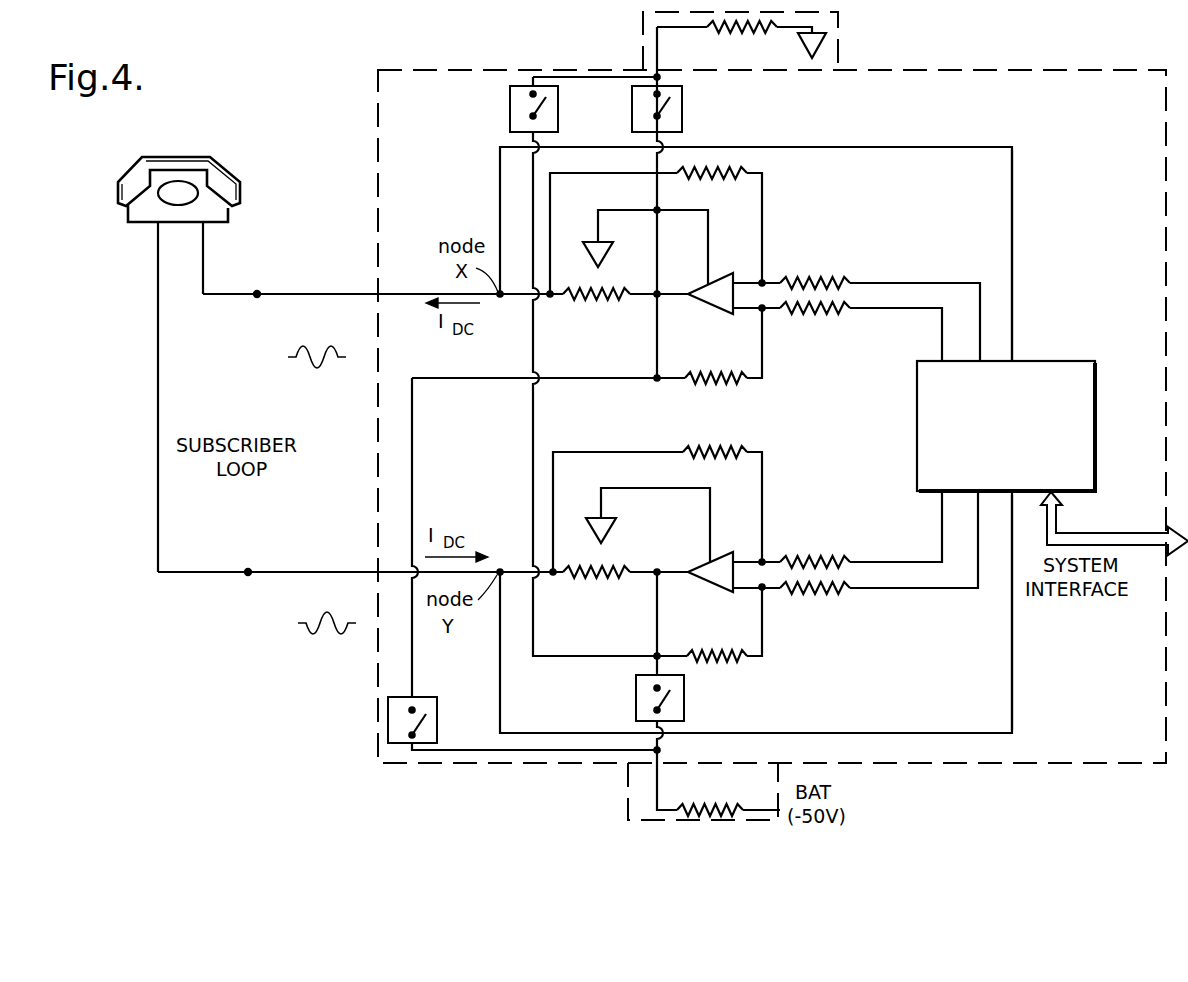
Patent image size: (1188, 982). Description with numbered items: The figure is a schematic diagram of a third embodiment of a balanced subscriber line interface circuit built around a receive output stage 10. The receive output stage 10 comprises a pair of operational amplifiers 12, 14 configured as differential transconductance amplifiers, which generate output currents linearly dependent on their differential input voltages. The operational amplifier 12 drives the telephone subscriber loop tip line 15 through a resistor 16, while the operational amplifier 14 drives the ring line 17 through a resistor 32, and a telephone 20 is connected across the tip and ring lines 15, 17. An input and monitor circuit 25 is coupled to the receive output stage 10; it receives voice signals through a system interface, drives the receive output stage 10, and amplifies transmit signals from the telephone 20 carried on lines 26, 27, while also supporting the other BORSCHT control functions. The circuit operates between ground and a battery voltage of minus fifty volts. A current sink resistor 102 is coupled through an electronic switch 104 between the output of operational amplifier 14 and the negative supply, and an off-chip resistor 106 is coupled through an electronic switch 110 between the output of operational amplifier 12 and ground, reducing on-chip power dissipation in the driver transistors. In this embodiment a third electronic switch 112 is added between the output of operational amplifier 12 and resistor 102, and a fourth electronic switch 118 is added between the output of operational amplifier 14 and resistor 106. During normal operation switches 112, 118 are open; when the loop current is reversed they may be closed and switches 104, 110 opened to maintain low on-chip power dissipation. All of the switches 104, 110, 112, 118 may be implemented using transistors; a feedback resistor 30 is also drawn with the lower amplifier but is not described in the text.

The receive output stage 10 is at (697, 421).
The operational amplifier 12 is at (712, 277).
The operational amplifier 14 is at (708, 565).
The tip line 15 is at (259, 292).
The resistor 16 is at (588, 298).
The ring line 17 is at (246, 573).
The telephone 20 is at (155, 215).
The input and monitor circuit 25 is at (917, 388).
The line 26 is at (1012, 224).
The line 27 is at (1012, 663).
The feedback resistor 30 is at (700, 455).
The resistor 32 is at (588, 575).
The current sink resistor 102 is at (697, 808).
The electronic switch 104 is at (684, 703).
The off-chip resistor 106 is at (742, 32).
The electronic switch 110 is at (682, 113).
The third electronic switch 112 is at (428, 718).
The fourth electronic switch 118 is at (558, 113).